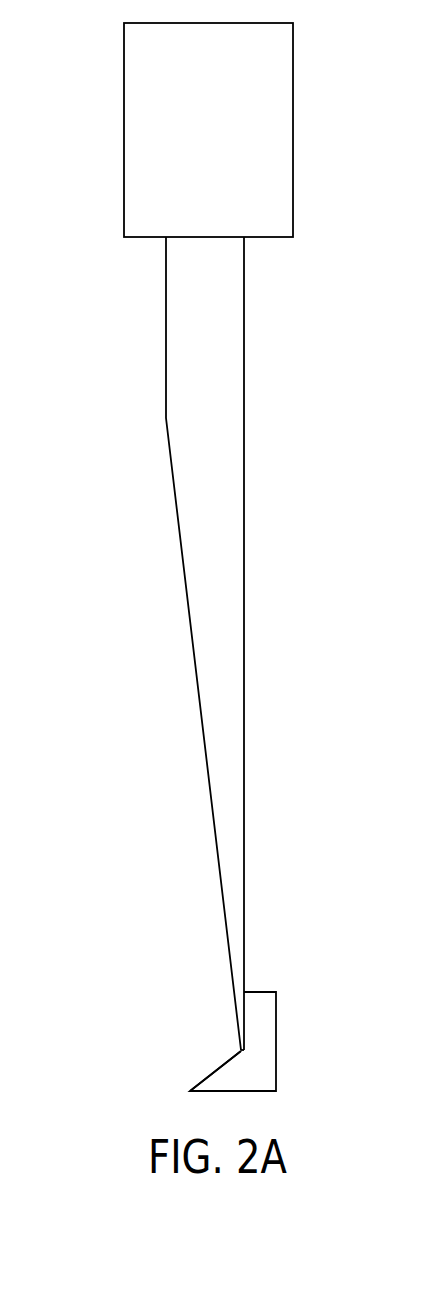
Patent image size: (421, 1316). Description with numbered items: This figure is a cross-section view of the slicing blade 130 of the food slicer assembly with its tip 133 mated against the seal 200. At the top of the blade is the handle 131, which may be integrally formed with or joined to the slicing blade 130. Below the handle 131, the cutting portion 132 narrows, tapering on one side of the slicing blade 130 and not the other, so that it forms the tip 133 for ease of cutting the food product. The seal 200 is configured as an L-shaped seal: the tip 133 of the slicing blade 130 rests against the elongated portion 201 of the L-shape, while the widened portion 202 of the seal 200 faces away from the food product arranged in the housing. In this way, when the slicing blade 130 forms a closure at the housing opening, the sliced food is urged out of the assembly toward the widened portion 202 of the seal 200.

The slicing blade 130 is at (86, 117).
The handle 131 is at (294, 187).
The cutting portion 132 is at (194, 664).
The tip 133 is at (233, 1012).
The seal 200 is at (262, 991).
The elongated portion 201 is at (245, 1032).
The widened portion 202 is at (210, 1073).